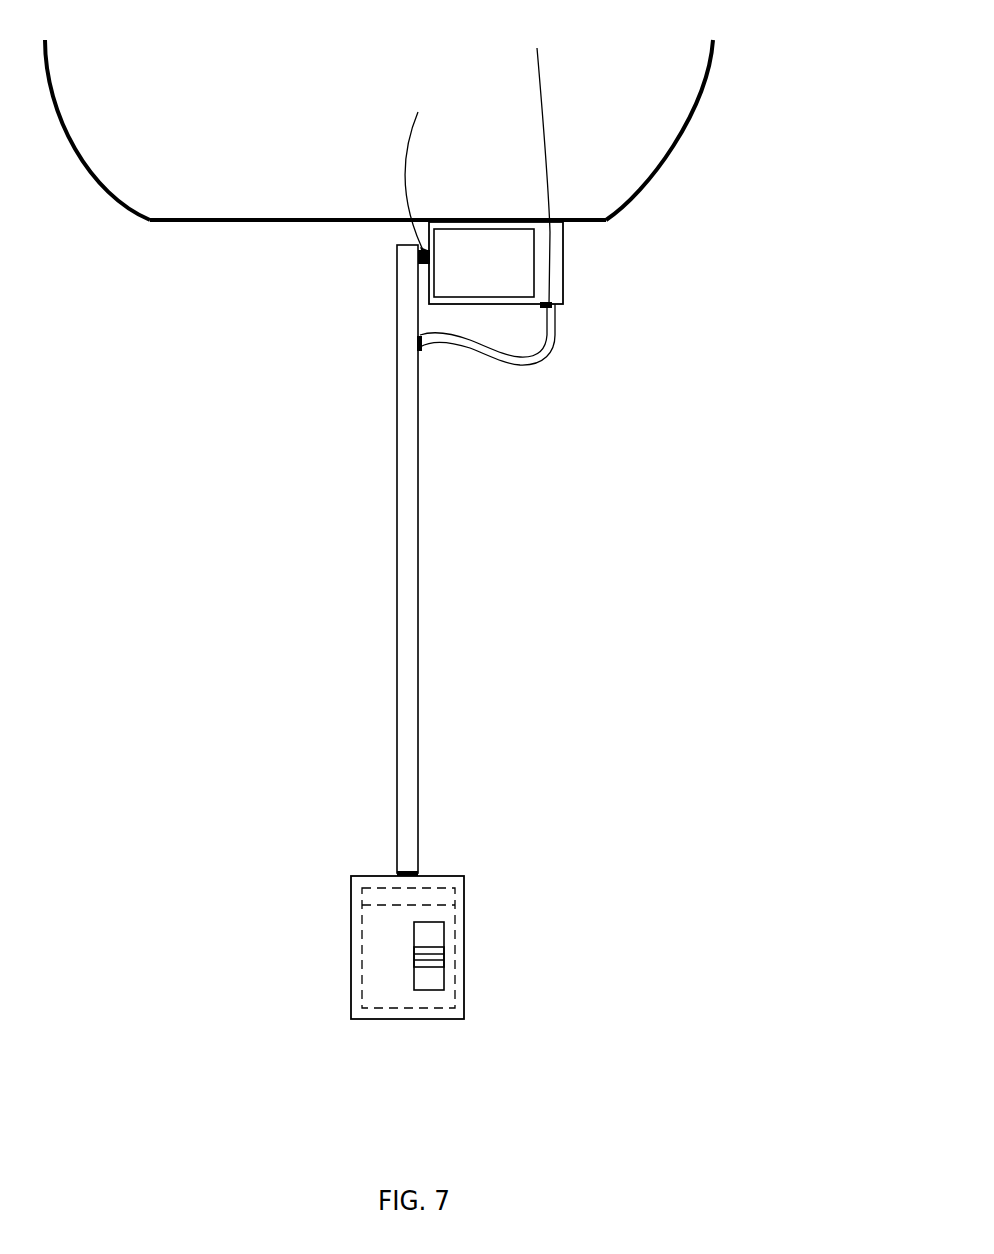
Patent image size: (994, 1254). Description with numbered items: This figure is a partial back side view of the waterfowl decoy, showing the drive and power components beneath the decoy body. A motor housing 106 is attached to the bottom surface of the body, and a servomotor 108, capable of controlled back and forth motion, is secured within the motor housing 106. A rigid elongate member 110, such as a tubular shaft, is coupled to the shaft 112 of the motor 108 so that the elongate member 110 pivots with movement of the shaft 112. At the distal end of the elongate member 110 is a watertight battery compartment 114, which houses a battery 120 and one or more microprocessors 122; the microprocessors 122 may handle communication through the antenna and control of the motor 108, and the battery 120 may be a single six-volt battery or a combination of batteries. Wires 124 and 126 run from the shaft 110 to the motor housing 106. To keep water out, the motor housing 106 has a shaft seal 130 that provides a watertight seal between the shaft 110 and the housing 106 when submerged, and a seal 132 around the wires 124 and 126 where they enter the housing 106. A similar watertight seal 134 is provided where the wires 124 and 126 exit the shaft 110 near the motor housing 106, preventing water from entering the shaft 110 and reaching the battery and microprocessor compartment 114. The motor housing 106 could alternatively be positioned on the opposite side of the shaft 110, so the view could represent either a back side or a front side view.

The motor housing 106 is at (563, 262).
The servomotor 108 is at (397, 428).
The rigid elongate member 110 is at (419, 642).
The shaft 112 is at (543, 558).
The watertight battery compartment 114 is at (465, 947).
The battery 120 is at (427, 972).
The microprocessor 122 is at (453, 812).
The wire 124 is at (488, 352).
The wire 126 is at (543, 358).
The shaft seal 130 is at (428, 270).
The seal 132 is at (550, 307).
The watertight seal 134 is at (420, 350).